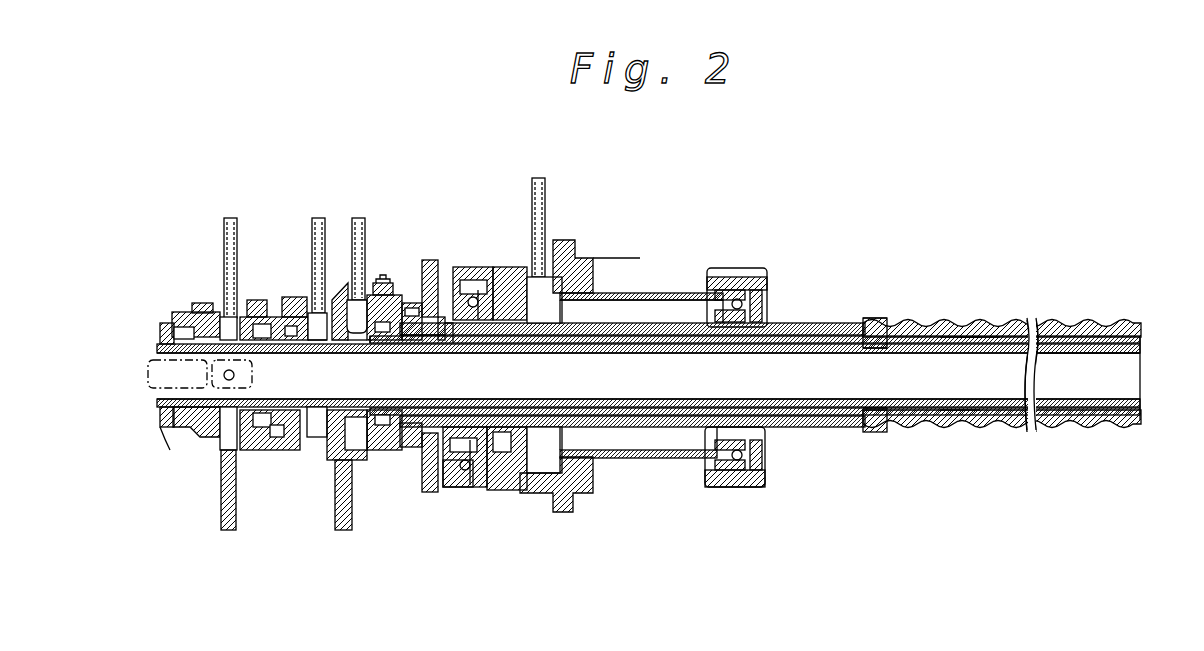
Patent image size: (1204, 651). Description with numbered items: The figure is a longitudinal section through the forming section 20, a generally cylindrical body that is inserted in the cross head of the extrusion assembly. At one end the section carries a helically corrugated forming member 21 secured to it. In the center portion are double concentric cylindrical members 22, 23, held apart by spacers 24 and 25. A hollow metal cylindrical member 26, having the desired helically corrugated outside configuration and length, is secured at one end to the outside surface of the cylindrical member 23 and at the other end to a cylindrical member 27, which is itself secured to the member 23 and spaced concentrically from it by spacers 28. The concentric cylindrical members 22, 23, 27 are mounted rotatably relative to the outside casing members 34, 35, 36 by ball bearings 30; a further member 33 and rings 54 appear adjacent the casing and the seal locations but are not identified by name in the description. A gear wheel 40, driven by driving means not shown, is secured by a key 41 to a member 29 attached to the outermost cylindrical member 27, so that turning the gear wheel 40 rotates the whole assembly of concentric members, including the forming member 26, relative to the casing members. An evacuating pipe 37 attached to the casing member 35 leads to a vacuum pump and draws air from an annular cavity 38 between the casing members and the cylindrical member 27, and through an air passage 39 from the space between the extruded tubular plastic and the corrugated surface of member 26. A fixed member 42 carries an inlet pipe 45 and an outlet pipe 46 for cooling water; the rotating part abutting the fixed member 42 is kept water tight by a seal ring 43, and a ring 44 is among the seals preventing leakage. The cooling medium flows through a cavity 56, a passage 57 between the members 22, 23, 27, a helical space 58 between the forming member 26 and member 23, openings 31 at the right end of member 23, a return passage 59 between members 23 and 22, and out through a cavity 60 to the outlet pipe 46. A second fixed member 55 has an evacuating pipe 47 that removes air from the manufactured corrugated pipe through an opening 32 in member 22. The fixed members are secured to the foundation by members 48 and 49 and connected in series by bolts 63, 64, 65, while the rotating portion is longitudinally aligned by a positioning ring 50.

The forming section 20 is at (648, 376).
The helically corrugated forming member 21 is at (996, 325).
The cylindrical member 22 is at (1142, 356).
The cylindrical member 23 is at (1140, 340).
The spacer 24 is at (877, 348).
The spacer 25 is at (410, 350).
The hollow cylindrical member 26 is at (1068, 322).
The cylindrical member 27 is at (835, 325).
The spacer 28 is at (880, 335).
The member 29 is at (762, 322).
The ball bearing 30 is at (757, 300).
The openings 31 is at (1105, 352).
The opening 32 is at (200, 374).
The sleeve end 33 is at (447, 330).
The casing member 34 is at (672, 300).
The casing member 35 is at (593, 262).
The casing member 36 is at (715, 268).
The evacuating pipe 37 is at (545, 178).
The annular cavity 38 is at (553, 285).
The air passage 39 is at (595, 290).
The gear wheel 40 is at (432, 260).
The key 41 is at (410, 303).
The fixed member 42 is at (342, 283).
The seal ring 43 is at (395, 447).
The ring 44 is at (335, 440).
The inlet pipe 45 is at (358, 218).
The outlet pipe 46 is at (318, 218).
The evacuating pipe 47 is at (232, 218).
The member 48 is at (228, 530).
The member 49 is at (345, 530).
The positioning ring 50 is at (168, 427).
The seal blocks 54 is at (205, 437).
The fixed member 55 is at (183, 320).
The cavity 56 is at (355, 345).
The passage 57 is at (478, 292).
The helical space 58 is at (958, 325).
The passage 59 is at (577, 346).
The cavity 60 is at (316, 348).
The bolt 63 is at (385, 283).
The bolt 64 is at (286, 297).
The bolt 65 is at (258, 300).